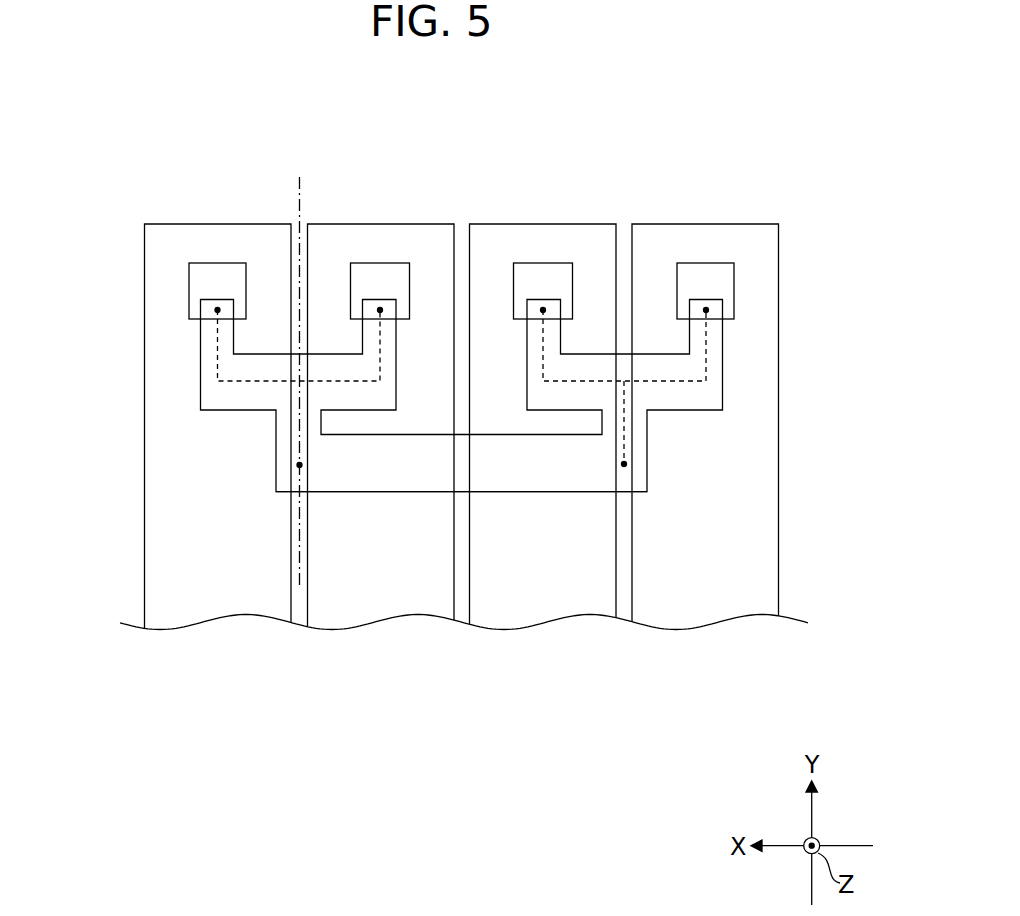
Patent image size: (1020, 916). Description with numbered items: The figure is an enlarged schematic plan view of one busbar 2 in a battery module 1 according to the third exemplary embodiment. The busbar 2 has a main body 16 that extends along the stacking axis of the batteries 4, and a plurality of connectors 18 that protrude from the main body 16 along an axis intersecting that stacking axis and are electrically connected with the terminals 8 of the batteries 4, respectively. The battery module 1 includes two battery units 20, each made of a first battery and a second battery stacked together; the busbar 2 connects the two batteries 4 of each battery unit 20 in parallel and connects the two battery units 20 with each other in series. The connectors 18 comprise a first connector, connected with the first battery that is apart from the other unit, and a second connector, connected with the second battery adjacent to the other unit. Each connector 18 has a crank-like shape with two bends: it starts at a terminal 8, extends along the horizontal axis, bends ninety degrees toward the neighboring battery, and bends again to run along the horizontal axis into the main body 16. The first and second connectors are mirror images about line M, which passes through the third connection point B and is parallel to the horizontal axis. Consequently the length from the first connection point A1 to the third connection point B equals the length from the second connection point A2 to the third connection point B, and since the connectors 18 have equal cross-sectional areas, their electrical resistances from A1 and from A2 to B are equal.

The battery module 1 is at (502, 848).
The busbar 2 is at (733, 411).
The battery 4 is at (217, 597).
The terminal 8 is at (217, 277).
The main body 16 is at (541, 475).
The connector 18 is at (200, 360).
The battery unit 20 is at (205, 711).
The line M is at (297, 180).
The first connection point A1 is at (217, 310).
The second connection point A2 is at (380, 310).
The third connection point B is at (299, 465).